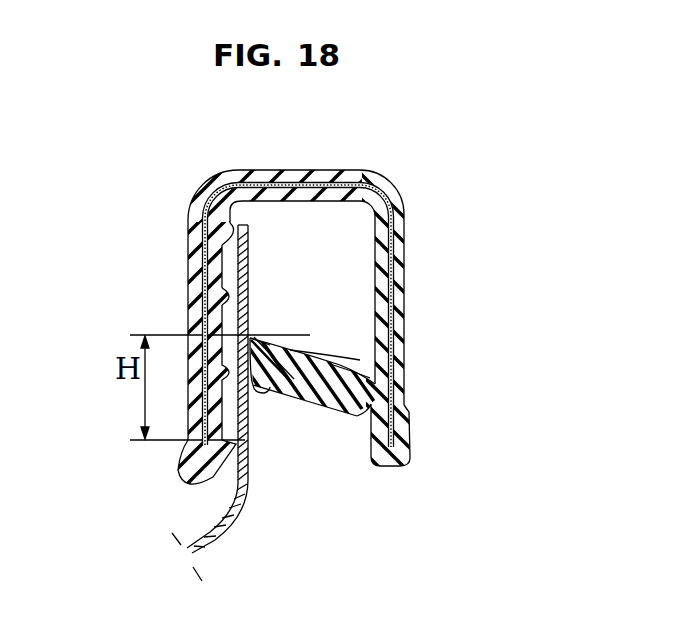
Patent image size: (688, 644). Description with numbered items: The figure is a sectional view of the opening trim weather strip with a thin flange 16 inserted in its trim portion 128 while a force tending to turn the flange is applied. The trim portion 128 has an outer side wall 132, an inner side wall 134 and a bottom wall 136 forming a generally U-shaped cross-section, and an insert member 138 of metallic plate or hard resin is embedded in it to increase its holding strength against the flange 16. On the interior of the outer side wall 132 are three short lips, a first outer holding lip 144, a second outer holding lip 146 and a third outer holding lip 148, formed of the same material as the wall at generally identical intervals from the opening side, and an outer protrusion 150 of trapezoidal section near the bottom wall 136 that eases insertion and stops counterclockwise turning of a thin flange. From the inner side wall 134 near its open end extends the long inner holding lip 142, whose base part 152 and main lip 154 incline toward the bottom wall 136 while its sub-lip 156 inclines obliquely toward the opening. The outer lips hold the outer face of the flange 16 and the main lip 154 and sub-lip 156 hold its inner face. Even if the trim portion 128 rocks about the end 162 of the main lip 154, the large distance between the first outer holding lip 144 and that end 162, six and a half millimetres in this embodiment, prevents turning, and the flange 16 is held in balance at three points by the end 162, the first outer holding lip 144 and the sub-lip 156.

The flange 16 is at (215, 527).
The trim portion 128 is at (406, 222).
The outer side wall 132 is at (200, 300).
The inner side wall 134 is at (404, 272).
The bottom wall 136 is at (298, 170).
The insert member 138 is at (385, 396).
The inner holding lip 142 is at (325, 363).
The first outer holding lip 144 is at (180, 460).
The second outer holding lip 146 is at (248, 335).
The third outer holding lip 148 is at (237, 272).
The outer protrusion 150 is at (232, 225).
The base part 152 is at (328, 405).
The main lip 154 is at (283, 350).
The sub-lip 156 is at (272, 395).
The end of the main lip 162 is at (253, 330).